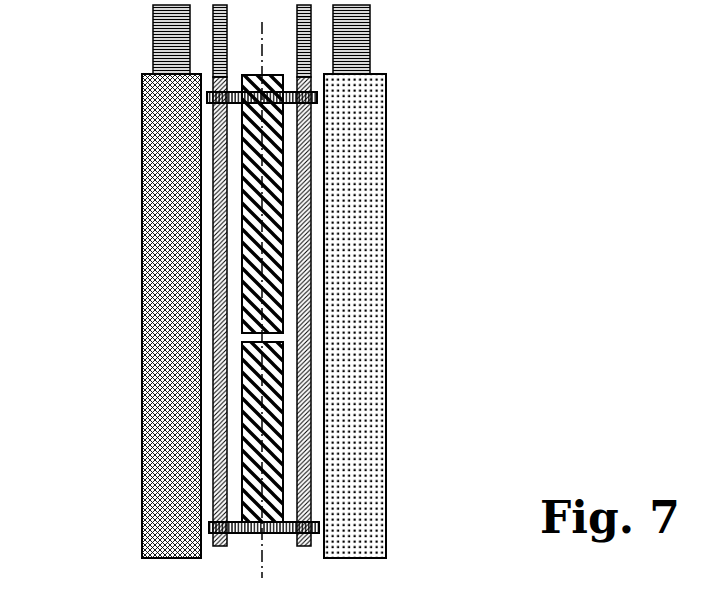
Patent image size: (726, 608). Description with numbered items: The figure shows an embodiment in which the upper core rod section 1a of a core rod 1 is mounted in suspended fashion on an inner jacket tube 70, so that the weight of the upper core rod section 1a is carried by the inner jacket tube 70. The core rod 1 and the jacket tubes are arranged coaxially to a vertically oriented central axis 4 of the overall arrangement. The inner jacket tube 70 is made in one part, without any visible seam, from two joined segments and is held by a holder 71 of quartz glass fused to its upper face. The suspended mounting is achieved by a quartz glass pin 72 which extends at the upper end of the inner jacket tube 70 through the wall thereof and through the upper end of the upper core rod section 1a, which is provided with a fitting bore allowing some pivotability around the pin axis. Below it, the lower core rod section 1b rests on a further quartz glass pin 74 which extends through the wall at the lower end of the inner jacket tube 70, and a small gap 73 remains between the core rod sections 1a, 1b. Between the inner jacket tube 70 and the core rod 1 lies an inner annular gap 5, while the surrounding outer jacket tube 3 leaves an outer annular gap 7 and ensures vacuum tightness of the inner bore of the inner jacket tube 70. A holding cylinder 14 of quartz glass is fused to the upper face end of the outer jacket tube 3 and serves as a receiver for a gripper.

The core rod 1 is at (252, 298).
The upper core rod section 1a is at (266, 203).
The lower core rod section 1b is at (262, 400).
The outer jacket tube 3 is at (163, 258).
The central axis 4 is at (265, 557).
The inner annular gap 5 is at (238, 358).
The outer annular gap 7 is at (208, 410).
The holding cylinder 14 is at (163, 50).
The inner jacket tube 70 is at (222, 212).
The holder 71 is at (308, 43).
The quartz glass pin 72 is at (313, 98).
The small gap 73 is at (260, 338).
The further quartz glass pin 74 is at (213, 527).